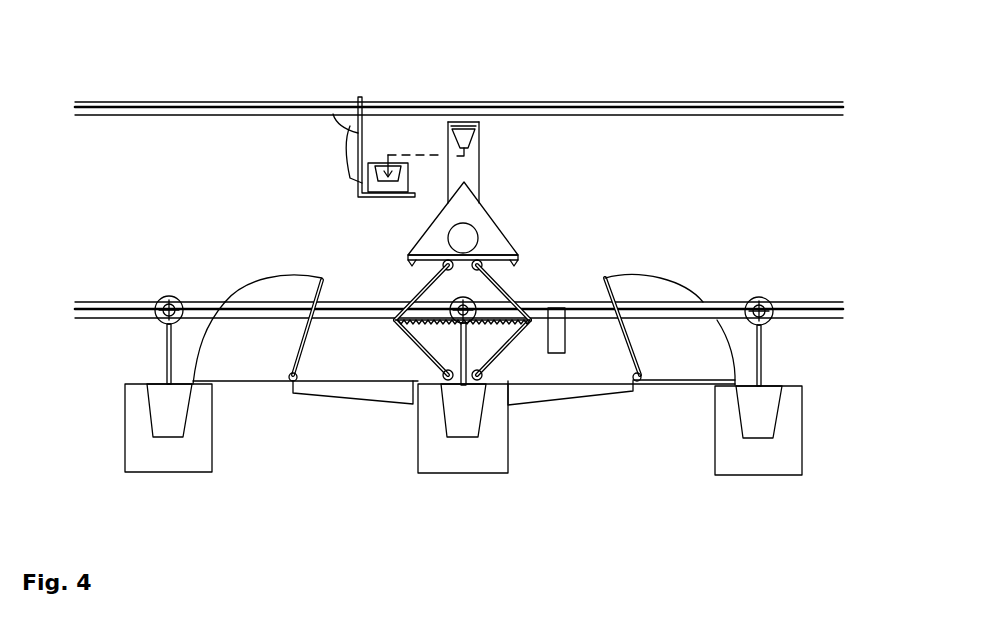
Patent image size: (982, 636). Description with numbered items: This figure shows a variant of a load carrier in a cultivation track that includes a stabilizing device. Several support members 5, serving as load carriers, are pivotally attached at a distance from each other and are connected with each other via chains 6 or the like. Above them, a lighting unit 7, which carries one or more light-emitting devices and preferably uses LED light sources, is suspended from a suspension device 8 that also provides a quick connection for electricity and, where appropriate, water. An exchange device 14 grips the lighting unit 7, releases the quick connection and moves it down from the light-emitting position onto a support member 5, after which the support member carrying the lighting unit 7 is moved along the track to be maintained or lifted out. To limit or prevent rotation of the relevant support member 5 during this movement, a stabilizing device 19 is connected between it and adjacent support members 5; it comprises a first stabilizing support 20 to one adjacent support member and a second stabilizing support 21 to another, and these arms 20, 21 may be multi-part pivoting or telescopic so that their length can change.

The support member 5 is at (140, 433).
The chain 6 is at (583, 310).
The lighting unit 7 is at (483, 225).
The suspension device 8 is at (333, 114).
The exchange device 14 is at (553, 250).
The stabilizing device 19 is at (375, 435).
The first stabilizing support 20 is at (277, 418).
The second stabilizing support 21 is at (622, 417).